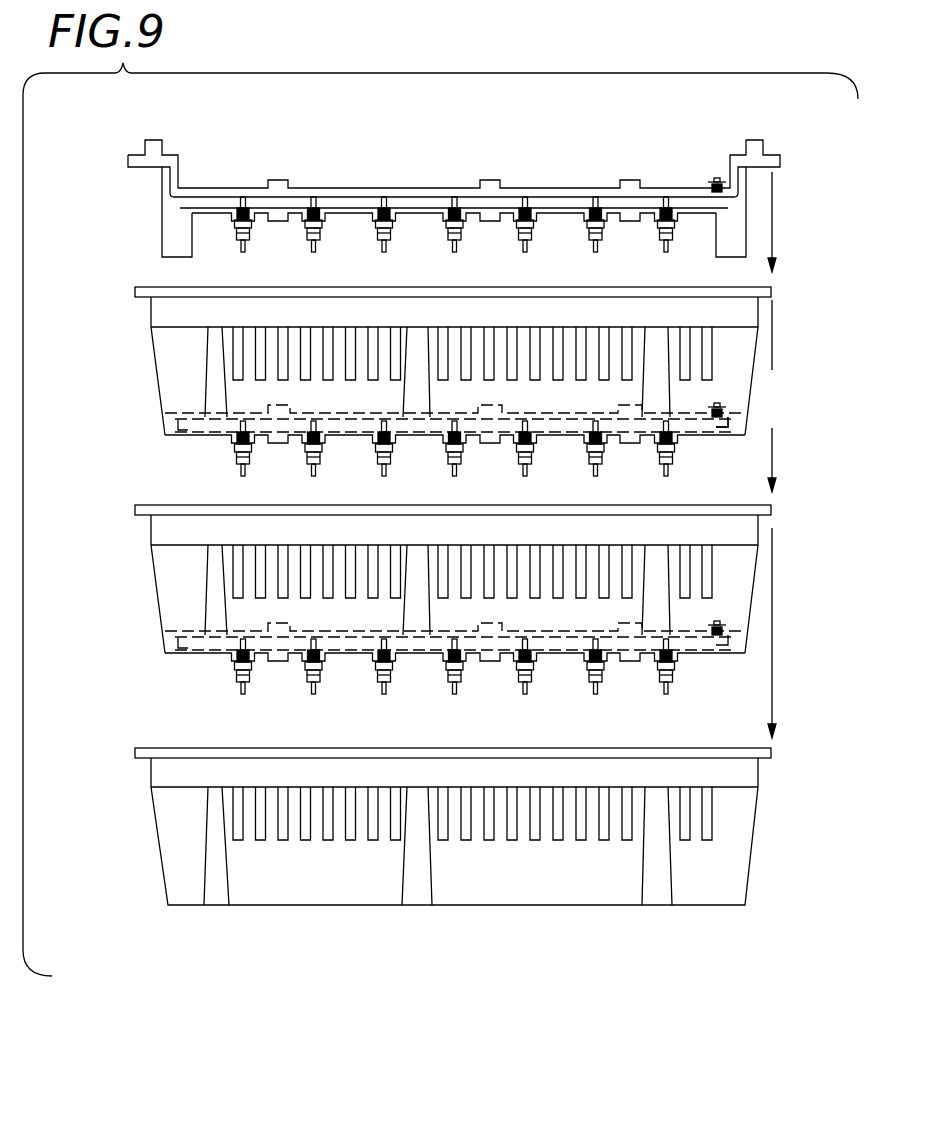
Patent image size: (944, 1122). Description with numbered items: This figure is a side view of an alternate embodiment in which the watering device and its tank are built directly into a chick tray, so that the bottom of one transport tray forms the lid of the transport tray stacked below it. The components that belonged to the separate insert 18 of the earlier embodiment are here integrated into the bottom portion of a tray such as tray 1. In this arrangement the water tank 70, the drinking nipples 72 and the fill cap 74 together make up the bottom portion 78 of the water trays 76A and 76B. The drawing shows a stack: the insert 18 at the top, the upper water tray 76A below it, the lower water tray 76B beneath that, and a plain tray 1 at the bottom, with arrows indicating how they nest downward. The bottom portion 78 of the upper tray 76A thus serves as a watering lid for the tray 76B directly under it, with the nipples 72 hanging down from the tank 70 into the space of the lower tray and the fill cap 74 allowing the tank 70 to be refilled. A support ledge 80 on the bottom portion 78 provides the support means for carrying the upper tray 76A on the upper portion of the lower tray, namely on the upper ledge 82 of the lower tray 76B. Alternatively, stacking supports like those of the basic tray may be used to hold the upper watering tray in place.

The insert 18 is at (418, 170).
The upper ledge 82 is at (146, 286).
The upper water tray 76A is at (124, 366).
The lower water tray 76B is at (118, 574).
The support ledge 80 is at (178, 438).
The bottom portion 78 is at (190, 459).
The fill cap 74 is at (718, 405).
The water tank 70 is at (740, 427).
The nipples 72 is at (673, 452).
The tray 1 is at (105, 836).